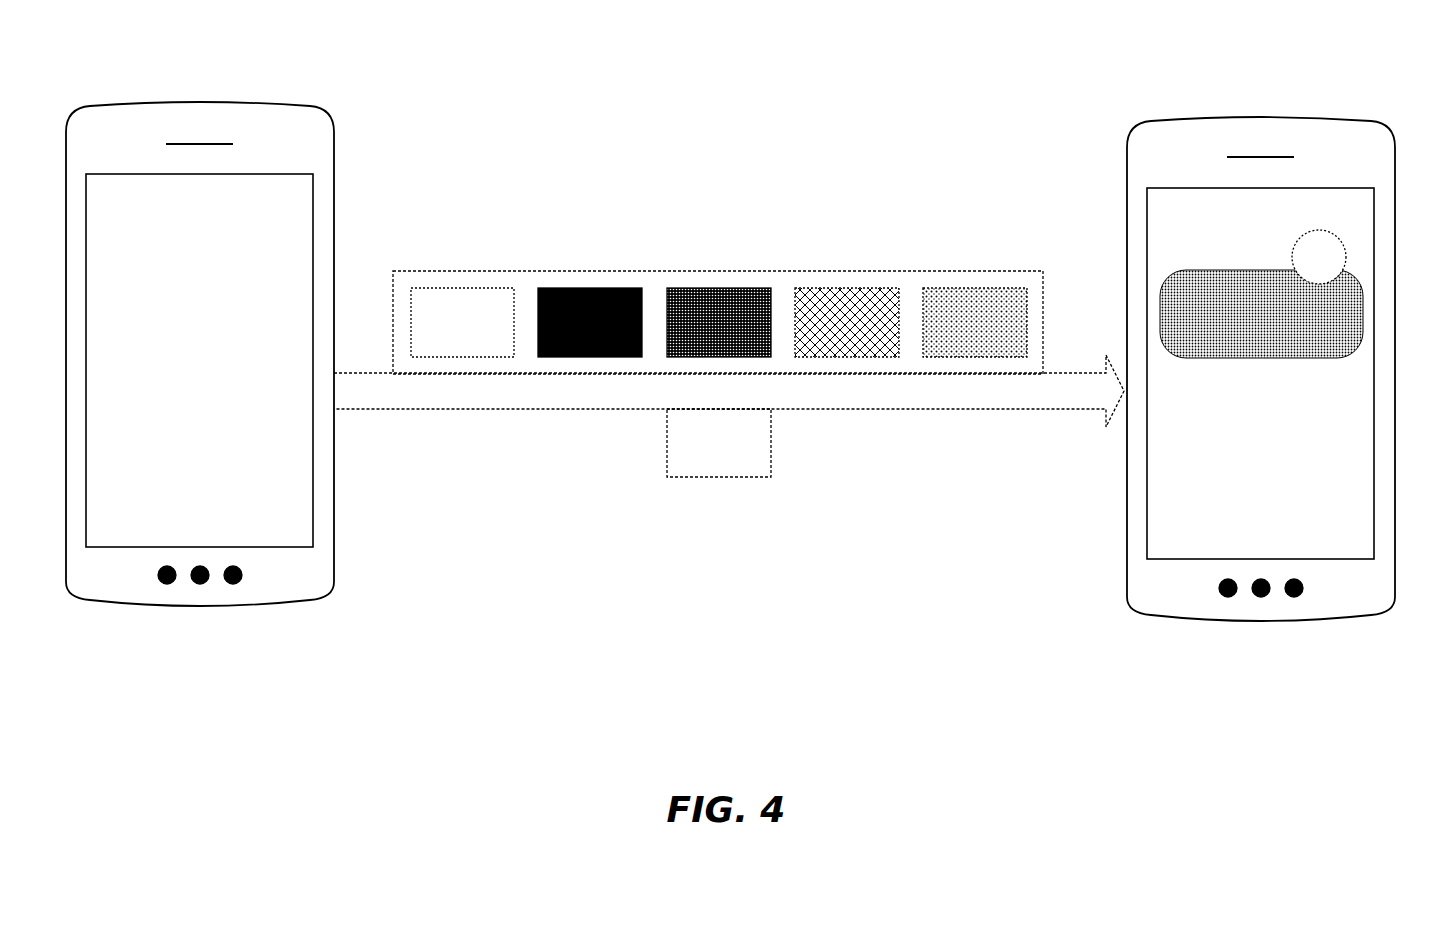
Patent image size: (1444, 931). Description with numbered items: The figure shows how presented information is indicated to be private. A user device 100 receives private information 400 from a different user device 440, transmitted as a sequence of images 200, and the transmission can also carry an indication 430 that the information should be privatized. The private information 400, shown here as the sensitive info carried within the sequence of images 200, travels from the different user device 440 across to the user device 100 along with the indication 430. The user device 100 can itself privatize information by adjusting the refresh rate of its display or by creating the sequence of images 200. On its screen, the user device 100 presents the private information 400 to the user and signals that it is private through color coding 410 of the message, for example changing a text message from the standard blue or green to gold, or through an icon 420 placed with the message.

The user device 100 is at (1260, 117).
The sequence of images 200 is at (718, 271).
The private information 400 is at (463, 288).
The color coding 410 is at (1362, 313).
The icon 420 is at (1320, 225).
The indication 430 is at (719, 443).
The different user device 440 is at (202, 102).